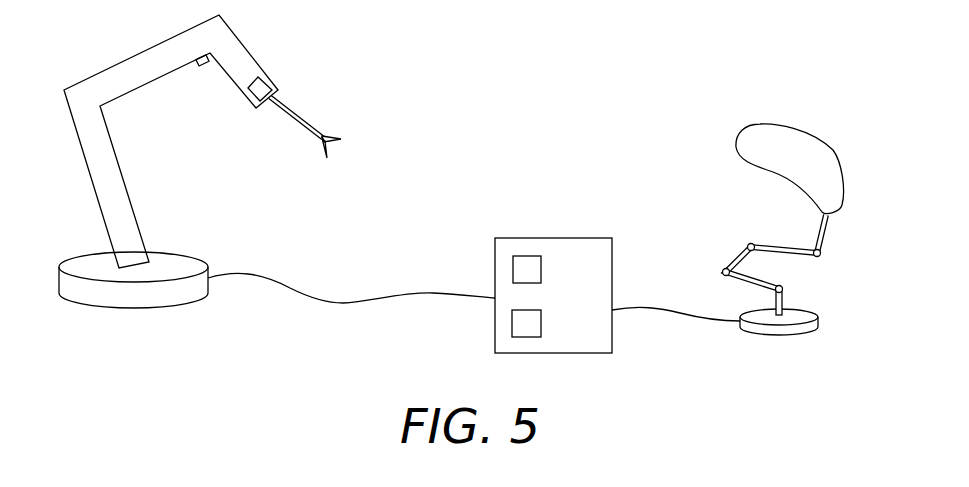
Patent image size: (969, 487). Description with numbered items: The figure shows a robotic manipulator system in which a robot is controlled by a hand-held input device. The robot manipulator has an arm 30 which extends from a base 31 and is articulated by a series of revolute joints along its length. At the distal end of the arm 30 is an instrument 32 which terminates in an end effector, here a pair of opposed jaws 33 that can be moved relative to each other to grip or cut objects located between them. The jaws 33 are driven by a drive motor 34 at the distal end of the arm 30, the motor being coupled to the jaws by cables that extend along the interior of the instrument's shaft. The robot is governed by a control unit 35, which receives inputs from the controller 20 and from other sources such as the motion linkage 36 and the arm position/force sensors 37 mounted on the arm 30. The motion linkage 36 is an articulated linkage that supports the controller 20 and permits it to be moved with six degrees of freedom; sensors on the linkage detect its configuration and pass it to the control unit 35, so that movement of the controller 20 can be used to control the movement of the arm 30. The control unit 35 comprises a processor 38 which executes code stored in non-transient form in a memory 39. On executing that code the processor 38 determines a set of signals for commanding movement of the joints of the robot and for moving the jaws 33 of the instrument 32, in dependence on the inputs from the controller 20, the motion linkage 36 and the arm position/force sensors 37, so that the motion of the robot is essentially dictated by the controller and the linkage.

The controller 20 is at (770, 133).
The arm 30 is at (122, 168).
The base 31 is at (137, 312).
The instrument 32 is at (302, 110).
The jaws 33 is at (333, 143).
The drive motor 34 is at (270, 82).
The control unit 35 is at (584, 238).
The motion linkage 36 is at (798, 272).
The arm position/force sensors 37 is at (201, 68).
The processor 38 is at (513, 270).
The memory 39 is at (512, 323).